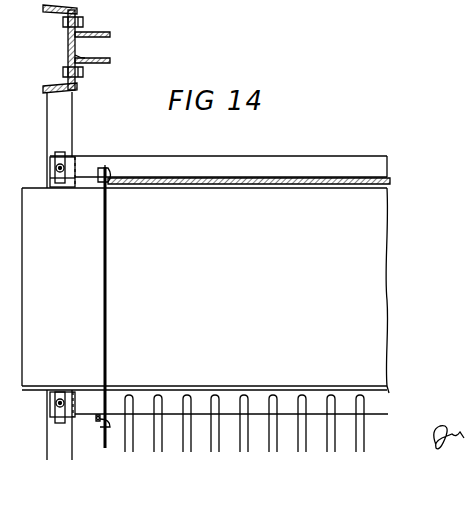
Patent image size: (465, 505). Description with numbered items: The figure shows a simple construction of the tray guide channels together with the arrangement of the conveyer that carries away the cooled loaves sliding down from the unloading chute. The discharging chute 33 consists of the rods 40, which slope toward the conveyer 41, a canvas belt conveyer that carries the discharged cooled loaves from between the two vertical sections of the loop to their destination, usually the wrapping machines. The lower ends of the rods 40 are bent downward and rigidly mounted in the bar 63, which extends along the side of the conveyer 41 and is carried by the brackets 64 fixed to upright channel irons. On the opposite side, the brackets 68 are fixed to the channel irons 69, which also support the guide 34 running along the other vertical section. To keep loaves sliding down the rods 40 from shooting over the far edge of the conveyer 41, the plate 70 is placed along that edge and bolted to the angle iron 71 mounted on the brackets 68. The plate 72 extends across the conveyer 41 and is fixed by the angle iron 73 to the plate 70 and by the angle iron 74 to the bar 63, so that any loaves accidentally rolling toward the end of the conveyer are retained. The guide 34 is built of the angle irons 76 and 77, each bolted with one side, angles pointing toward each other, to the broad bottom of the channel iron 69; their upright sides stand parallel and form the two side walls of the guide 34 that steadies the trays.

The discharging chute 33 is at (362, 438).
The guide 34 is at (87, 47).
The rods 40 is at (215, 445).
The conveyer 41 is at (372, 250).
The bar 63 is at (372, 407).
The brackets 64 is at (52, 451).
The brackets 68 is at (47, 130).
The channel irons 69 is at (70, 42).
The plate 70 is at (390, 180).
The angle iron 71 is at (348, 161).
The plate 72 is at (107, 290).
The angle iron 73 is at (107, 170).
The angle iron 74 is at (98, 424).
The angle iron 76 is at (110, 35).
The angle iron 77 is at (110, 62).